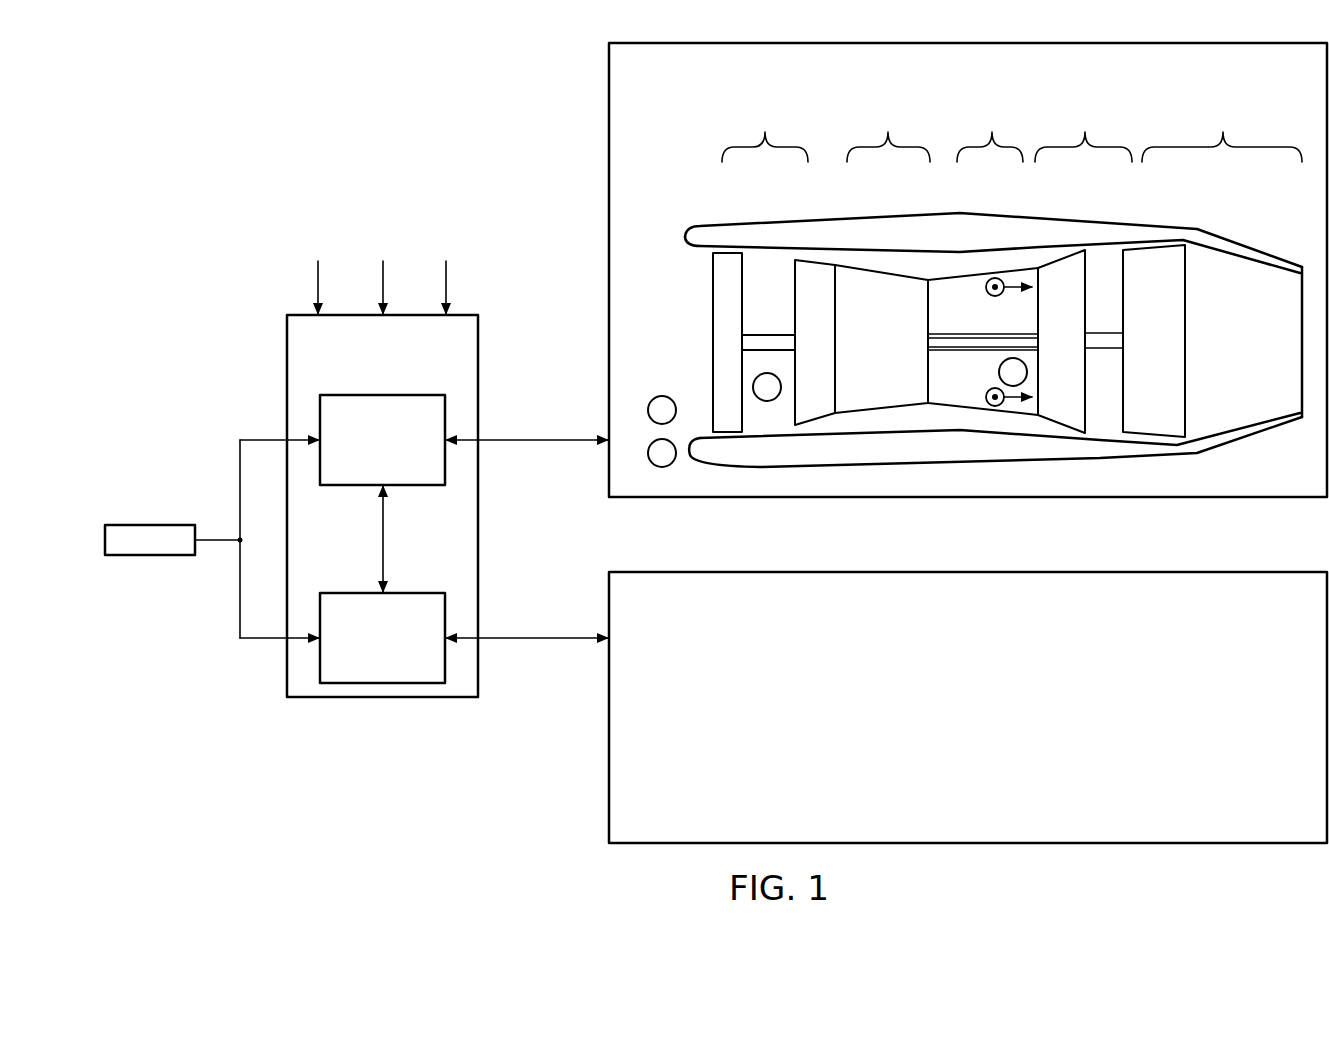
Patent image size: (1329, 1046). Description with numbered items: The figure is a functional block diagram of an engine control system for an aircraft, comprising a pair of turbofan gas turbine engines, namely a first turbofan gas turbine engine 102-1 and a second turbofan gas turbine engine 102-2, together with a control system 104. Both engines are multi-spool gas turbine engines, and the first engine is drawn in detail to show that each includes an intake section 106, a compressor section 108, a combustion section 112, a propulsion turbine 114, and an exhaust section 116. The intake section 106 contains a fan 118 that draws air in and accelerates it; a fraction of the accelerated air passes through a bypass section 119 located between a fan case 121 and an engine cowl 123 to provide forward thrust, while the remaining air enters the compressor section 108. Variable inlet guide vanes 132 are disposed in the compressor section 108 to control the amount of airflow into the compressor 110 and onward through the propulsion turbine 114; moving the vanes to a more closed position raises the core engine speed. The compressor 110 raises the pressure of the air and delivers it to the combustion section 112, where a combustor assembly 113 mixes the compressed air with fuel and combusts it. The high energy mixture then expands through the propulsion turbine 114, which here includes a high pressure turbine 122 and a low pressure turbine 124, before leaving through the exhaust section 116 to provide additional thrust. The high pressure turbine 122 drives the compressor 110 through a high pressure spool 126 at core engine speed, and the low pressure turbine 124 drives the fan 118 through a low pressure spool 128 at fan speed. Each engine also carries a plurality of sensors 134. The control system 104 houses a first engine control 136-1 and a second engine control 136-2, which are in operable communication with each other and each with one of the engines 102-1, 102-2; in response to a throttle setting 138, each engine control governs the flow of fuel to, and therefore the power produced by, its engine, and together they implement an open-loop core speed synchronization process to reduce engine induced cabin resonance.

The first turbofan gas turbine engine 102-1 is at (918, 498).
The second turbofan gas turbine engine 102-2 is at (1053, 572).
The control system 104 is at (287, 373).
The intake section 106 is at (765, 133).
The compressor section 108 is at (888, 133).
The compressor 110 is at (881, 339).
The combustion section 112 is at (990, 133).
The combustor assembly 113 is at (996, 278).
The propulsion turbine 114 is at (1083, 133).
The exhaust section 116 is at (1222, 133).
The fan 118 is at (713, 328).
The bypass section 119 is at (922, 270).
The fan case 121 is at (683, 237).
The high pressure turbine 122 is at (1080, 341).
The engine cowl 123 is at (973, 276).
The low pressure turbine 124 is at (1154, 341).
The high pressure spool 126 is at (988, 352).
The low pressure spool 128 is at (778, 335).
The variable inlet guide vanes 132 is at (817, 250).
The sensors 134 is at (662, 396).
The first engine control 136-1 is at (447, 465).
The second engine control 136-2 is at (447, 617).
The throttle setting 138 is at (148, 522).